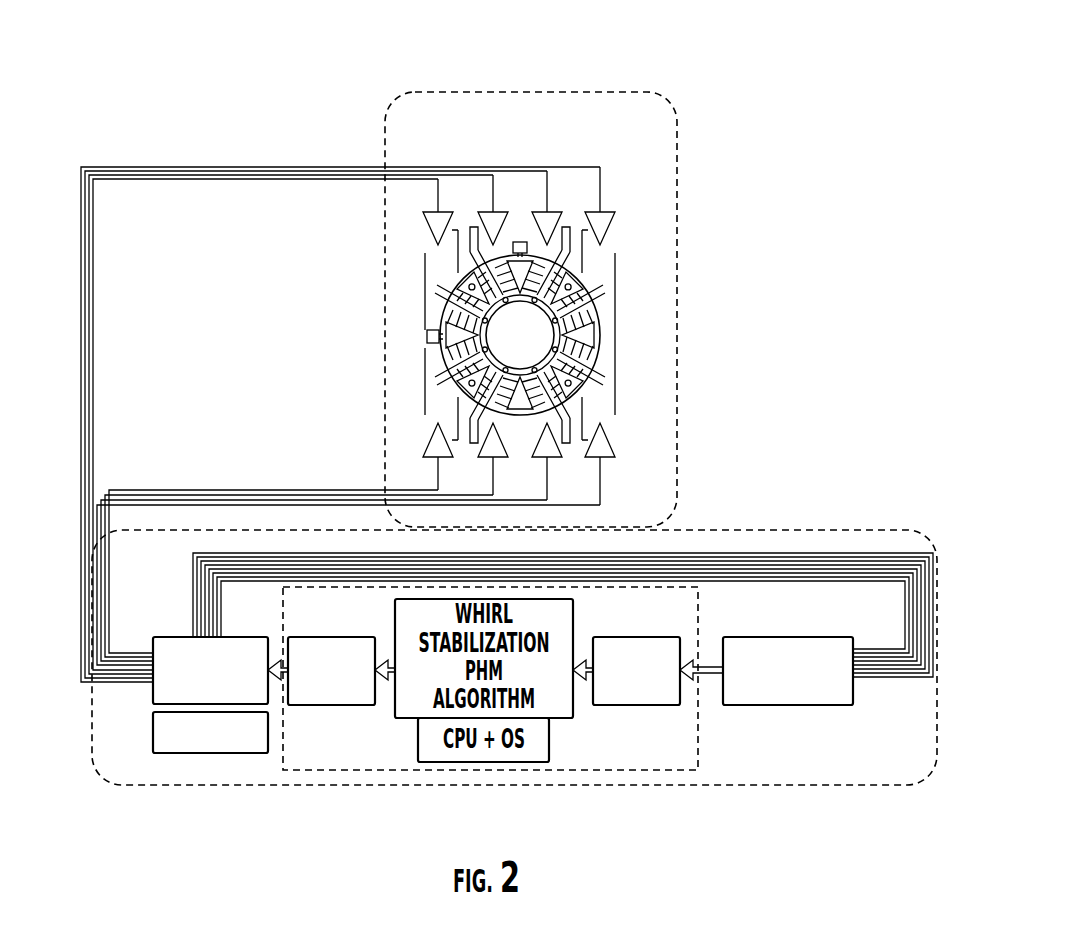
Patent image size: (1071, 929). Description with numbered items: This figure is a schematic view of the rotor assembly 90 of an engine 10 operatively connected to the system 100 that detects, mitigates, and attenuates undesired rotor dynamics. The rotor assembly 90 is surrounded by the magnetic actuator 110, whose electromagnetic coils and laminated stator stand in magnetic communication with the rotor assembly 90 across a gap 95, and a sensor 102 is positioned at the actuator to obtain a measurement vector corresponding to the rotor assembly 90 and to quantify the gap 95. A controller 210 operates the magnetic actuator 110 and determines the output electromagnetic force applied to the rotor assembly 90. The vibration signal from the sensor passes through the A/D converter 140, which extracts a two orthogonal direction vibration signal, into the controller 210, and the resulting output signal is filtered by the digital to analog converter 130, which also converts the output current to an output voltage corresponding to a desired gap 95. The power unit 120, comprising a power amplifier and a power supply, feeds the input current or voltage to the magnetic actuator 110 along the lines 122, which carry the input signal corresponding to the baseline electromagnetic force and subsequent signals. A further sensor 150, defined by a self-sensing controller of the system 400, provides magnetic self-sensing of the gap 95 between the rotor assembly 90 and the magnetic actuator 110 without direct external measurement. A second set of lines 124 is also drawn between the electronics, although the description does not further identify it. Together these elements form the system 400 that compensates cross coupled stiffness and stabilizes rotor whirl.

The engine 10 is at (655, 58).
The system for controlling rotor dynamics 100 is at (552, 92).
The rotor assembly 90 is at (598, 347).
The gap 95 is at (518, 392).
The magnetic actuator 110 is at (593, 300).
The sensor 102 is at (518, 240).
The input signal lines 122 is at (207, 180).
The sensor wires 124 is at (243, 576).
The power unit 120 is at (158, 636).
The digital to analog converter 130 is at (312, 706).
The A/D converter 140 is at (612, 706).
The sensor 150 is at (770, 636).
The controller 210 is at (361, 771).
The system 400 is at (92, 690).